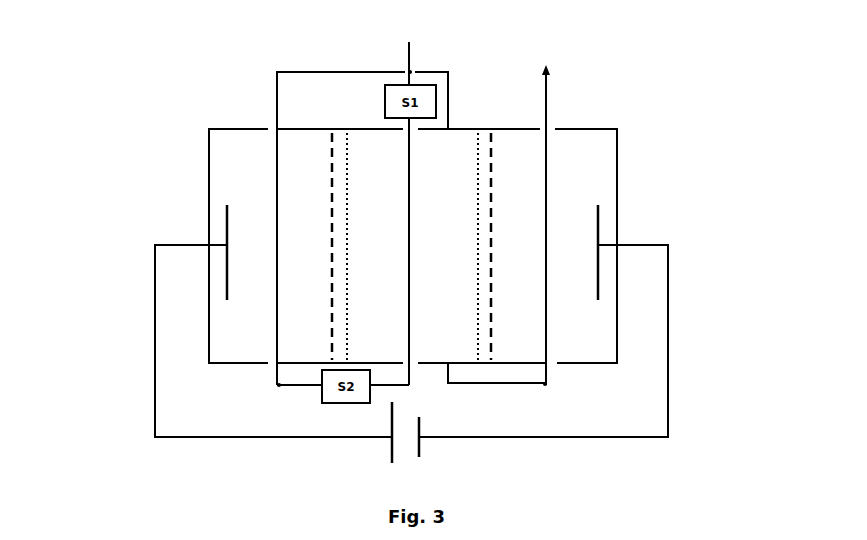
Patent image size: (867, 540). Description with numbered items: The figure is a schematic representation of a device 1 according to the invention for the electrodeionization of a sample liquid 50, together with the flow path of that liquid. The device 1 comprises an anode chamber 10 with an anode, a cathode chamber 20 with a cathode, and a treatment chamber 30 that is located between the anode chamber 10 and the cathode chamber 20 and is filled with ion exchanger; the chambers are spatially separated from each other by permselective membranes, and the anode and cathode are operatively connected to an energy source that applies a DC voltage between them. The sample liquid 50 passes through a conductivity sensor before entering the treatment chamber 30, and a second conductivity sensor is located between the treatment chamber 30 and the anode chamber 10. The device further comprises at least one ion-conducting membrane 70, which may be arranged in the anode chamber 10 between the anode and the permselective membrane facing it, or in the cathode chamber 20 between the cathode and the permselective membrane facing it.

The device 1 is at (128, 100).
The anode chamber 10 is at (245, 252).
The cathode chamber 20 is at (578, 252).
The treatment chamber 30 is at (409, 251).
The sample liquid 50 is at (410, 54).
The ion-conducting membrane 70 is at (328, 272).